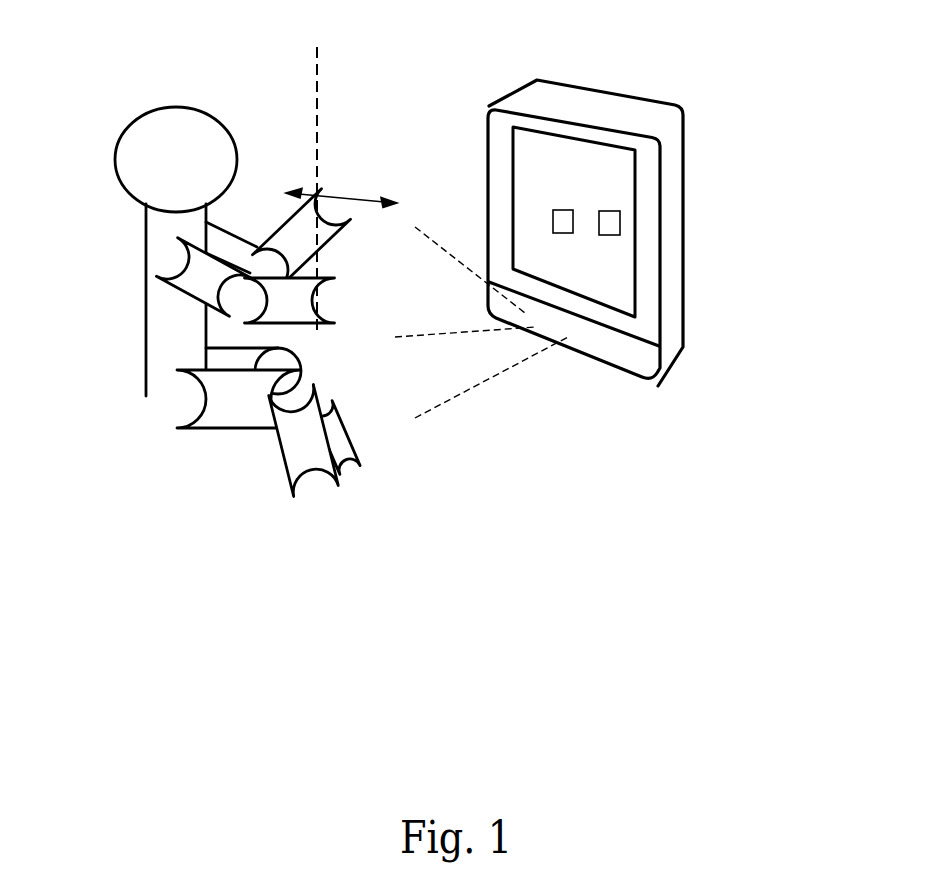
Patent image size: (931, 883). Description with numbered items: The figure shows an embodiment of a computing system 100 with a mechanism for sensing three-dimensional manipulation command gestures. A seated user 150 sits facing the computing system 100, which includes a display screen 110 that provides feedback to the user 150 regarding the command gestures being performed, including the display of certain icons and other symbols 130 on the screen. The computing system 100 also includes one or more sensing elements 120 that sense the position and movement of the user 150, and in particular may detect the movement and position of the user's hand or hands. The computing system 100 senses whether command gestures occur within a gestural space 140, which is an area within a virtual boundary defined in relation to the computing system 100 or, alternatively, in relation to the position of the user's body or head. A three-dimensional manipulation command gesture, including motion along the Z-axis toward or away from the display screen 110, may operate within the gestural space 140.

The computing system 100 is at (621, 248).
The display screen 110 is at (636, 170).
The sensing elements 120 is at (633, 362).
The icons and other symbols 130 is at (608, 236).
The gestural space 140 is at (427, 232).
The user 150 is at (145, 238).